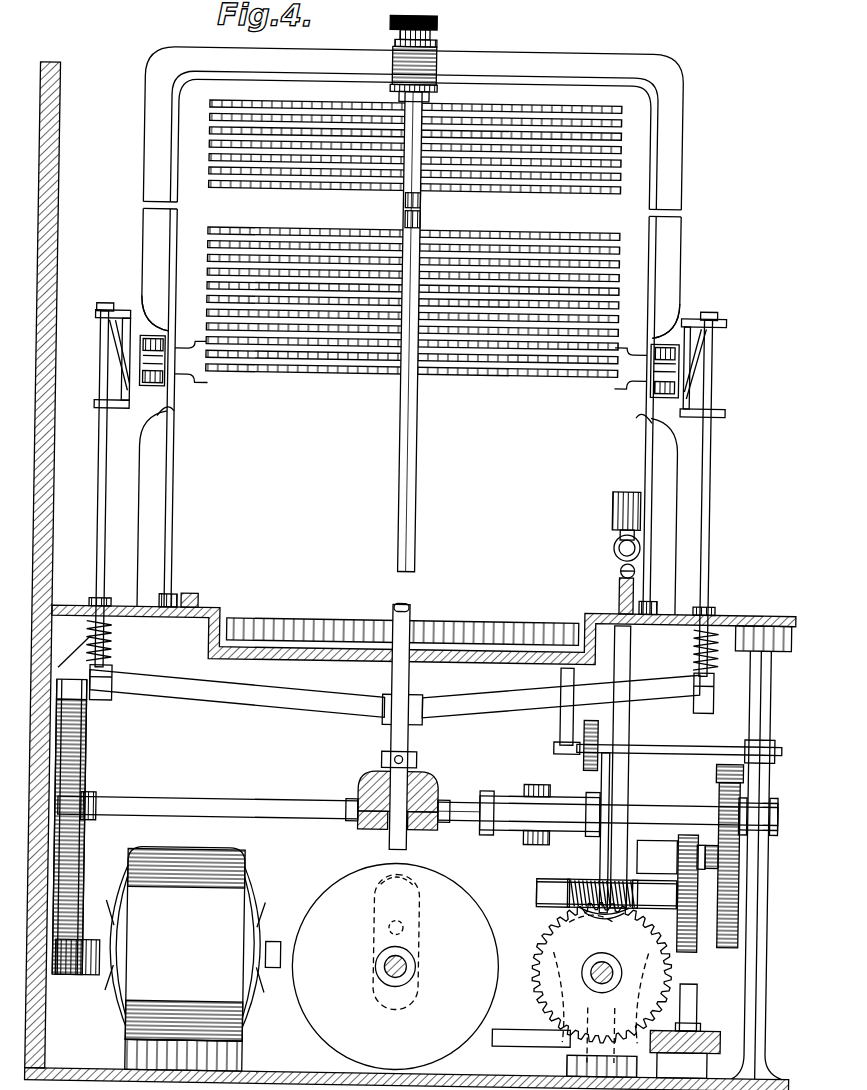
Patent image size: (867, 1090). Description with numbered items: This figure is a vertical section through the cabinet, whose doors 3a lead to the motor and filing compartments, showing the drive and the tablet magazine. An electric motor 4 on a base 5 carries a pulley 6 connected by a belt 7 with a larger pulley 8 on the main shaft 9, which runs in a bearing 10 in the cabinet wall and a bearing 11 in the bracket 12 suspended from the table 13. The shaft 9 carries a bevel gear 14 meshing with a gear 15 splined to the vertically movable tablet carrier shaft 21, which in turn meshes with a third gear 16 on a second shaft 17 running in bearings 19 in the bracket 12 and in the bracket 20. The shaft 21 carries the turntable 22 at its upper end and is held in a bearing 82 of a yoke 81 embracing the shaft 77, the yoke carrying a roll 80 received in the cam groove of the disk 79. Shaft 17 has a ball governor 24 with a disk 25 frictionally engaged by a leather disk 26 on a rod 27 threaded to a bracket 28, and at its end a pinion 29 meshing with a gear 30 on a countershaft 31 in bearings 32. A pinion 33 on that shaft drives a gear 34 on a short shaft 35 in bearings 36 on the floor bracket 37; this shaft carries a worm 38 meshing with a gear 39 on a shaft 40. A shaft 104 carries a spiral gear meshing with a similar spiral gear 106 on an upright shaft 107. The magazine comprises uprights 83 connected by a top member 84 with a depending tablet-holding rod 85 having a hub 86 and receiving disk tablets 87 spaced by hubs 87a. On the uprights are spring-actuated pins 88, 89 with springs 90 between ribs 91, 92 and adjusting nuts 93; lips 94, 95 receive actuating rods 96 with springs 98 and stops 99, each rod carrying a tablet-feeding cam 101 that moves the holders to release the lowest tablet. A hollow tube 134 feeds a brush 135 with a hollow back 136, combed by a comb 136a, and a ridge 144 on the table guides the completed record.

The doors 3a is at (48, 1034).
The electric motor 4 is at (240, 868).
The base 5 is at (240, 1060).
The pulley 6 is at (84, 980).
The belt 7 is at (89, 850).
The larger pulley 8 is at (89, 750).
The main shaft 9 is at (182, 802).
The bearing 10 is at (80, 728).
The bearing 11 is at (356, 800).
The bracket 12 is at (385, 735).
The table 13 is at (186, 611).
The bevel gear 14 is at (378, 830).
The gear 15 is at (430, 778).
The third gear 16 is at (425, 830).
The second shaft 17 is at (468, 820).
The bearings 19 is at (450, 806).
The bracket 20 is at (752, 724).
The tablet carrier shaft 21 is at (411, 733).
The turntable 22 is at (456, 630).
The governor 24 is at (536, 783).
The disk 25 is at (613, 775).
The second disk 26 is at (594, 768).
The rod 27 is at (660, 742).
The bracket 28 is at (563, 722).
The pinion 29 is at (723, 808).
The gear 30 is at (720, 766).
The countershaft 31 is at (704, 841).
The bearings 32 is at (655, 840).
The pinion 33 is at (710, 850).
The gear 34 is at (690, 948).
The short shaft 35 is at (542, 889).
The bearings 36 is at (604, 921).
The bracket 37 is at (575, 1058).
The worm 38 is at (590, 877).
The gear 39 is at (552, 1002).
The shaft 40 is at (608, 950).
The shaft 77 is at (422, 966).
The disk 79 is at (322, 1003).
The roll 80 is at (410, 927).
The yoke 81 is at (372, 967).
The bearing 82 is at (382, 896).
The uprights 83 is at (170, 489).
The top member 84 is at (582, 52).
The tablet-holding rod 85 is at (415, 434).
The hub 86 is at (382, 22).
The disk tablets 87 is at (497, 190).
The hubs 87a is at (399, 186).
The tablet holding and delivering members 88 is at (198, 386).
The tablet holding and delivering members 89 is at (190, 348).
The springs 90 is at (137, 362).
The rib 91 is at (270, 696).
The rib 92 is at (143, 330).
The adjusting nuts 93 is at (140, 348).
The lip 94 is at (100, 315).
The lip 95 is at (96, 413).
The actuating rods 96 is at (97, 484).
The springs 98 is at (113, 642).
The stops 99 is at (95, 605).
The tablet-feeding cam 101 is at (117, 375).
The shaft 104 is at (520, 1045).
The spiral gear 106 is at (700, 1027).
The upright shaft 107 is at (704, 996).
The hollow tubular member 134 is at (612, 511).
The brush 135 is at (621, 576).
The hollow back 136 is at (614, 551).
The comb 136a is at (620, 598).
The ridge 144 is at (199, 604).